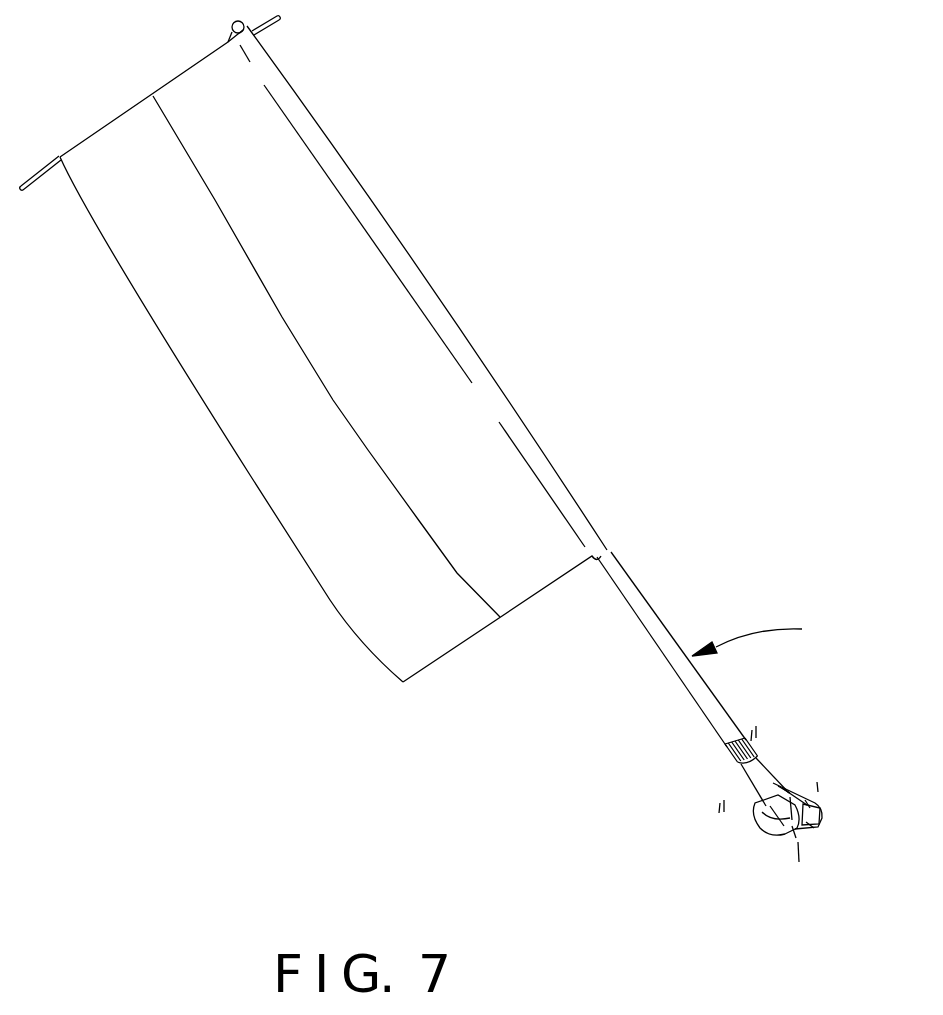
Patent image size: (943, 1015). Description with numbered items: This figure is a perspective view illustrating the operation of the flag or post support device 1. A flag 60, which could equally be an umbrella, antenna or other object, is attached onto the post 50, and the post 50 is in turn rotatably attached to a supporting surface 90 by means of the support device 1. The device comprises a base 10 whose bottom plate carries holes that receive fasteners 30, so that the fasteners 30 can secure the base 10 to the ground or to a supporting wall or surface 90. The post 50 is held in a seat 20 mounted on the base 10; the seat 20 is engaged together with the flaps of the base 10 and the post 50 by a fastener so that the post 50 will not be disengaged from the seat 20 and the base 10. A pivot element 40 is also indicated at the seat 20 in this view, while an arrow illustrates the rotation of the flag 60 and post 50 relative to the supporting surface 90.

The flag or post support device 1 is at (770, 848).
The base 10 is at (795, 800).
The seat 20 is at (768, 830).
The fasteners 30 is at (778, 786).
The pivot pin 40 is at (795, 838).
The post 50 is at (644, 601).
The flags 60 is at (200, 382).
The supporting surface 90 is at (737, 478).